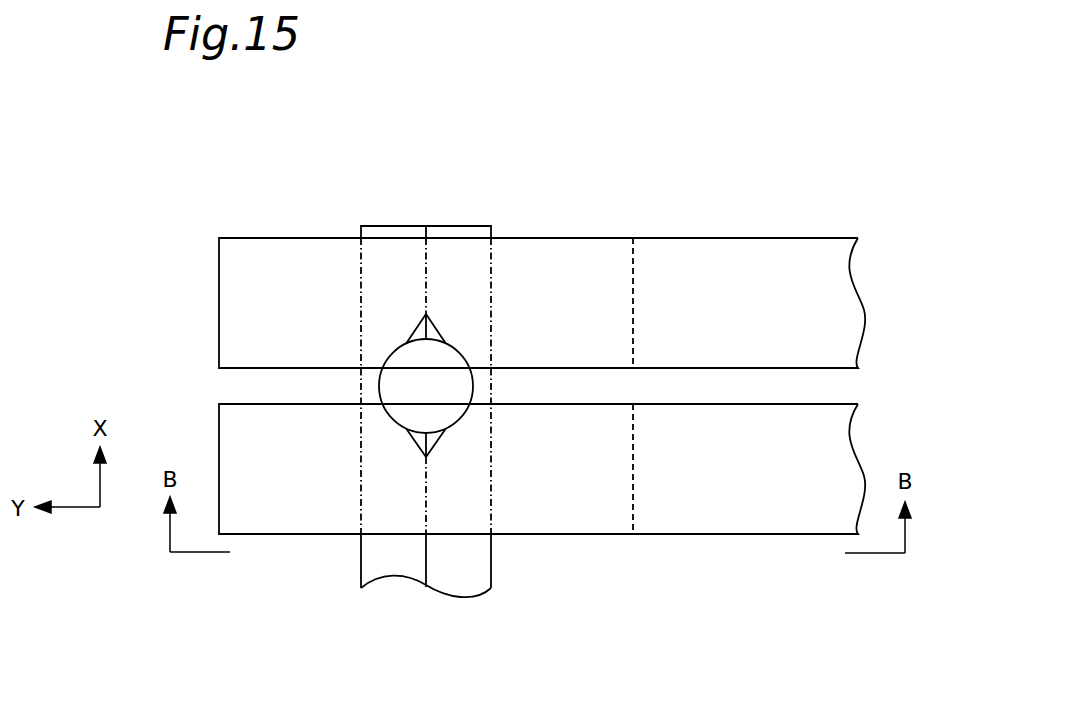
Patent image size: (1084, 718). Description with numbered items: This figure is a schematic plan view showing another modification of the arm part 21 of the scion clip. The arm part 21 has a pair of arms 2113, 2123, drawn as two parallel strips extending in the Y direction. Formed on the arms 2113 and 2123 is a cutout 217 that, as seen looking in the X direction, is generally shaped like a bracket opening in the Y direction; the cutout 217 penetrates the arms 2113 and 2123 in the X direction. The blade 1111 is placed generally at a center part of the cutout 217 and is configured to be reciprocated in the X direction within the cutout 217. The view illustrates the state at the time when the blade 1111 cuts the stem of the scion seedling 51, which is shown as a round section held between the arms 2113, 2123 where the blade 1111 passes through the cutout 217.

The arm part 21 is at (350, 166).
The arm 2113 is at (248, 433).
The arm 2123 is at (308, 280).
The scion seedling 51 is at (408, 368).
The blade 1111 is at (452, 226).
The cutout 217 is at (632, 292).